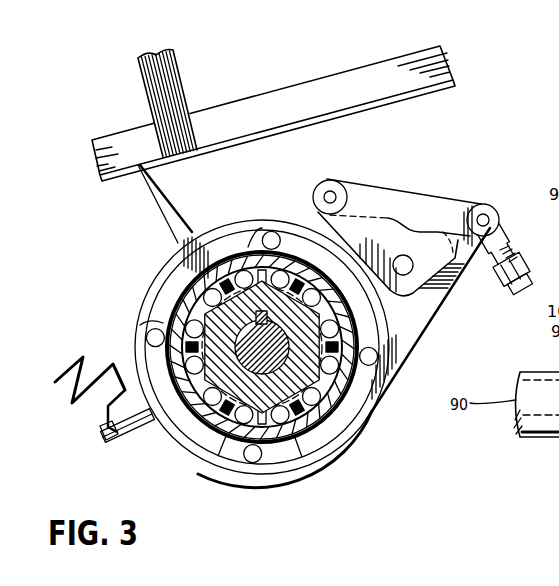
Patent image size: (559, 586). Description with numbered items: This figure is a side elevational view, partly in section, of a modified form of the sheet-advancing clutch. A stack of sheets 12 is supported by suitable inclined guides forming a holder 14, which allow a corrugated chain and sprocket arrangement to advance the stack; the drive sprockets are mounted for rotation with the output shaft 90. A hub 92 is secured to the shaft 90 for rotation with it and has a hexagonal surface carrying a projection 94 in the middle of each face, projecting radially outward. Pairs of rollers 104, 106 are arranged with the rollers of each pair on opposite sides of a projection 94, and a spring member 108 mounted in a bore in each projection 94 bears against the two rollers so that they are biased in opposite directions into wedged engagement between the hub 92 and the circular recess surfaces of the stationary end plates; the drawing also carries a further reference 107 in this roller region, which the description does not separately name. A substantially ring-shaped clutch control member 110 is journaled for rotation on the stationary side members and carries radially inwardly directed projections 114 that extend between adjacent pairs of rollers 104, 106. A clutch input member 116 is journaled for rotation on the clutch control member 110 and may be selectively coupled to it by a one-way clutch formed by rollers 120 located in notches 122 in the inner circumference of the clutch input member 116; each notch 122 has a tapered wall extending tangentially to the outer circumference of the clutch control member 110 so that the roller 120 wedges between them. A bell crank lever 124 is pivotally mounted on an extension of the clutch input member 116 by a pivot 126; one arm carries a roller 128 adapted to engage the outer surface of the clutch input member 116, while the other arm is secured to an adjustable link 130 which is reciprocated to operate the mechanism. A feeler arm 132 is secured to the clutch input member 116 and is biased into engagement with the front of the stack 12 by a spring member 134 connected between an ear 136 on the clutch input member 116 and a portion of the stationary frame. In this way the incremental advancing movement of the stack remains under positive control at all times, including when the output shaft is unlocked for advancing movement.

The stack of sheets 12 is at (177, 65).
The inclined holder 14 is at (333, 74).
The output shaft 90 is at (283, 359).
The hub 92 is at (268, 399).
The projection 94 is at (346, 445).
The roller 104 is at (168, 440).
The roller 106 is at (229, 471).
The housing tab 107 is at (296, 471).
The spring member 108 is at (210, 260).
The clutch control member 110 is at (176, 309).
The radially inwardly directed projection 114 is at (156, 328).
The clutch input member 116 is at (415, 329).
The roller 120 is at (260, 236).
The notch 122 is at (268, 231).
The bell crank lever 124 is at (383, 217).
The pivot 126 is at (447, 276).
The roller 128 is at (330, 180).
The adjustable link 130 is at (513, 258).
The feeler arm 132 is at (153, 210).
The spring member 134 is at (69, 400).
The ear 136 is at (103, 437).